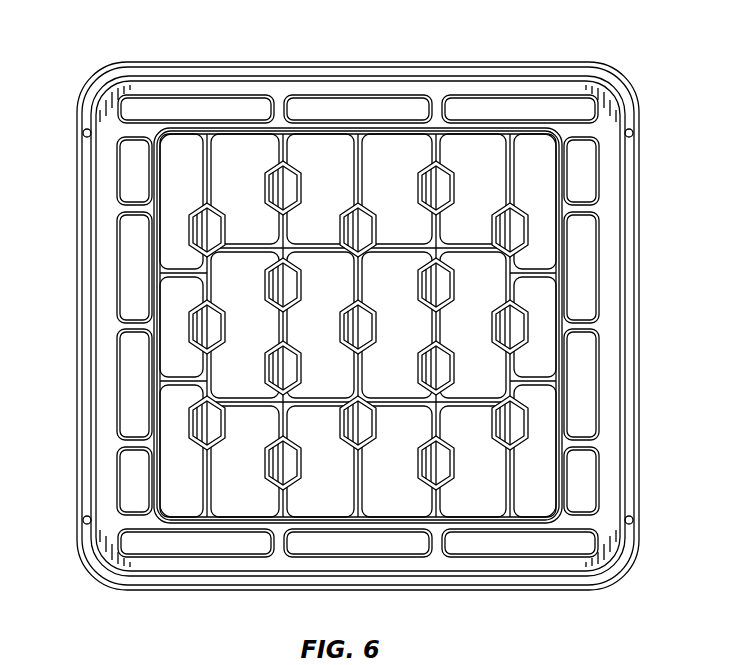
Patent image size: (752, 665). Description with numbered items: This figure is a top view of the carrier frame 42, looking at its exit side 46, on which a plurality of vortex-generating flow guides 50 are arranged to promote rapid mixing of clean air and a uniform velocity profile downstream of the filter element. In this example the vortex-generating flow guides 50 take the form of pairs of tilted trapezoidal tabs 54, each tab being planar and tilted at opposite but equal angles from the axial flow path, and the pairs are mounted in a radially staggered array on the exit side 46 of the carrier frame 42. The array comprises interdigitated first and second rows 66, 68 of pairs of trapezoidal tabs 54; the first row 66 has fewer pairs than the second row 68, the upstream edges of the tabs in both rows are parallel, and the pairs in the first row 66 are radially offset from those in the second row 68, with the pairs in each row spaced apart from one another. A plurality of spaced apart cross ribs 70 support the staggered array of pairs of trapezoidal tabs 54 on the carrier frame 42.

The carrier frame 42 is at (641, 331).
The exit side 46 is at (539, 82).
The vortex-generating flow guide 50 is at (240, 172).
The tilted trapezoidal tab 54 is at (303, 157).
The first row 66 is at (152, 160).
The second row 68 is at (275, 153).
The cross rib 70 is at (207, 493).